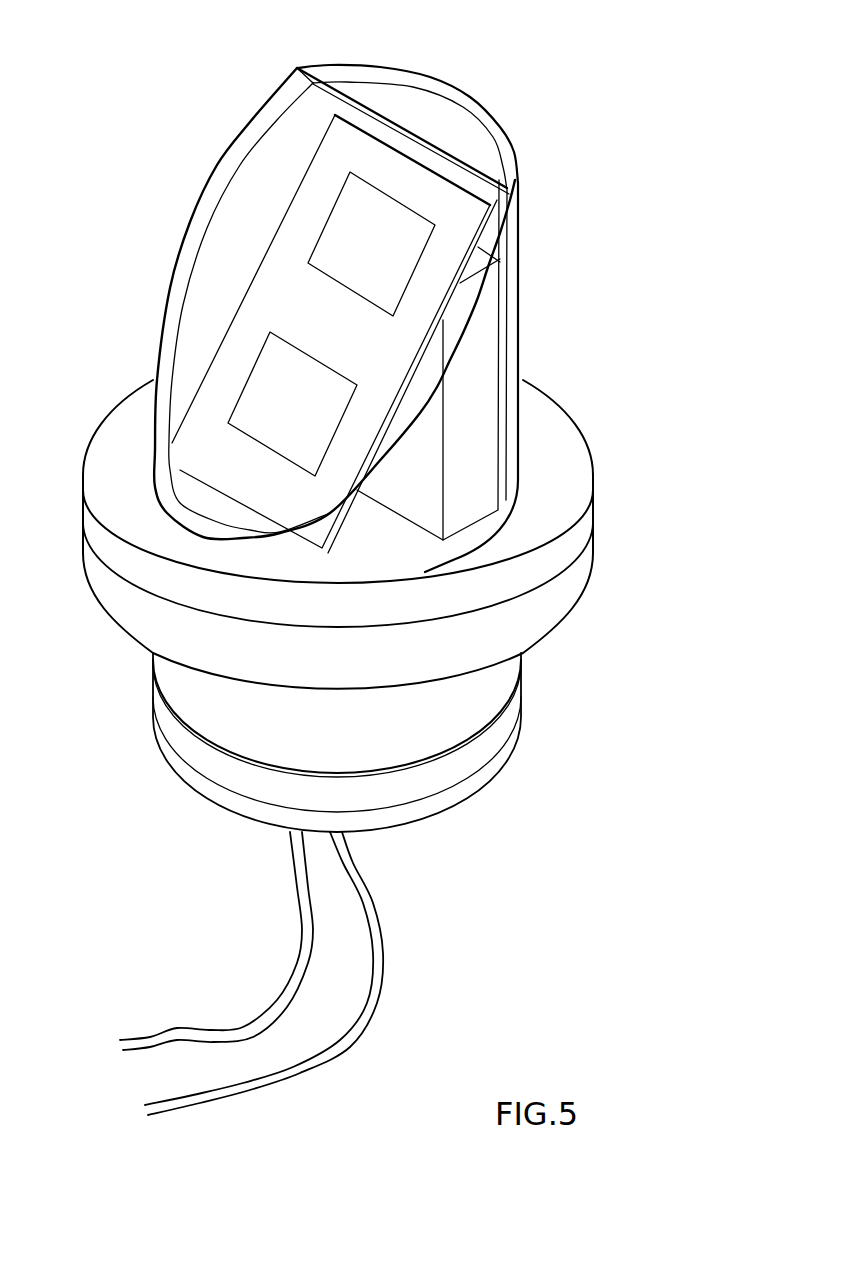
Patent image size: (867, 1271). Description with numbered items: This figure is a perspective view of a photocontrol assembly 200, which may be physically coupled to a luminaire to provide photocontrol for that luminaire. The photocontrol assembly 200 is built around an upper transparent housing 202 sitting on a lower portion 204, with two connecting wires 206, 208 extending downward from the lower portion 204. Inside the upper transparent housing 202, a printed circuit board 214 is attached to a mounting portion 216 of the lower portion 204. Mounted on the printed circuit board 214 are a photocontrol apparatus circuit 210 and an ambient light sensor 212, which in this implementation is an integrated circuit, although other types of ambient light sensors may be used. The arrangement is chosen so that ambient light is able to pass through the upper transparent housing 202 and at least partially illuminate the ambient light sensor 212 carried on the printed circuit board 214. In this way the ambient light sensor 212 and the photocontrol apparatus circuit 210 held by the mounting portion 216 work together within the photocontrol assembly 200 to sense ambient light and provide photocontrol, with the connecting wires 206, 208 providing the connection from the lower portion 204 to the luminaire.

The photocontrol assembly 200 is at (602, 50).
The upper transparent housing 202 is at (238, 142).
The lower portion 204 is at (553, 583).
The connecting wire 206 is at (308, 917).
The connecting wire 208 is at (375, 928).
The photocontrol apparatus circuit 210 is at (327, 223).
The ambient light sensor 212 is at (240, 397).
The printed circuit board 214 is at (453, 218).
The mounting portion 216 is at (465, 378).